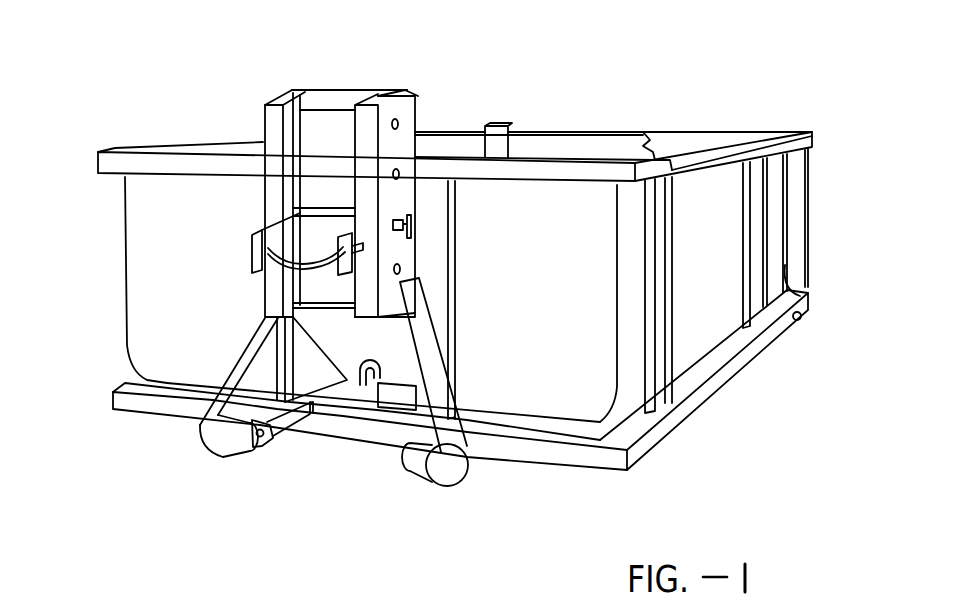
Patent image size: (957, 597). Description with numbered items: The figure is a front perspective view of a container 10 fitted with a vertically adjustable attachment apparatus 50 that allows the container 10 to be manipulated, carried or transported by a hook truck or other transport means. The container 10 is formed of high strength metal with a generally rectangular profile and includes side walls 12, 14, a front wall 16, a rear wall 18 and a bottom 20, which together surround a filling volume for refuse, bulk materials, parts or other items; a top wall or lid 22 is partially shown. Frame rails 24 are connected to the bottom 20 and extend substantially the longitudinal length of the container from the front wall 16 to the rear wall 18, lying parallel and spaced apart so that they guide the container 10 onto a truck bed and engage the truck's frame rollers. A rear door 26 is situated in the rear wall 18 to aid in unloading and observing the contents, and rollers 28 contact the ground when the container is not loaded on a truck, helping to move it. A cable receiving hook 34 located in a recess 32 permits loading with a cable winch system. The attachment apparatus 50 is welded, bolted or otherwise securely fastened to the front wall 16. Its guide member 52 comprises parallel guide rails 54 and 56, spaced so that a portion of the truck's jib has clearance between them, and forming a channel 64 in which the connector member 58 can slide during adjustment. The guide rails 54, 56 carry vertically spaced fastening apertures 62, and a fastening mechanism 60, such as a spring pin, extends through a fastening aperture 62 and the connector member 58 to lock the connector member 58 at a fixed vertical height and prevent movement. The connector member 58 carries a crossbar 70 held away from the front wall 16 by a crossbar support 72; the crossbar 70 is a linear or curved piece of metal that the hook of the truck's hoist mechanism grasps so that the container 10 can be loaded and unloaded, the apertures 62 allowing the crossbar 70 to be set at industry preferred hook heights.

The container 10 is at (163, 150).
The side wall 12 is at (720, 308).
The side wall 14 is at (455, 146).
The front wall 16 is at (143, 255).
The rear wall 18 is at (500, 133).
The bottom 20 is at (717, 392).
The lid 22 is at (708, 135).
The frame rails 24 is at (220, 458).
The rear door 26 is at (572, 131).
The rollers 28 is at (797, 318).
The recess 32 is at (310, 403).
The cable receiving hook 34 is at (372, 382).
The adjustable attachment apparatus 50 is at (300, 66).
The guide member 52 is at (350, 90).
The guide rail 54 is at (292, 98).
The guide rail 56 is at (402, 110).
The connector member 58 is at (320, 208).
The fastening mechanism 60 is at (411, 226).
The fastening apertures 62 is at (402, 267).
The channel 64 is at (336, 110).
The crossbar 70 is at (308, 258).
The crossbar support 72 is at (255, 252).